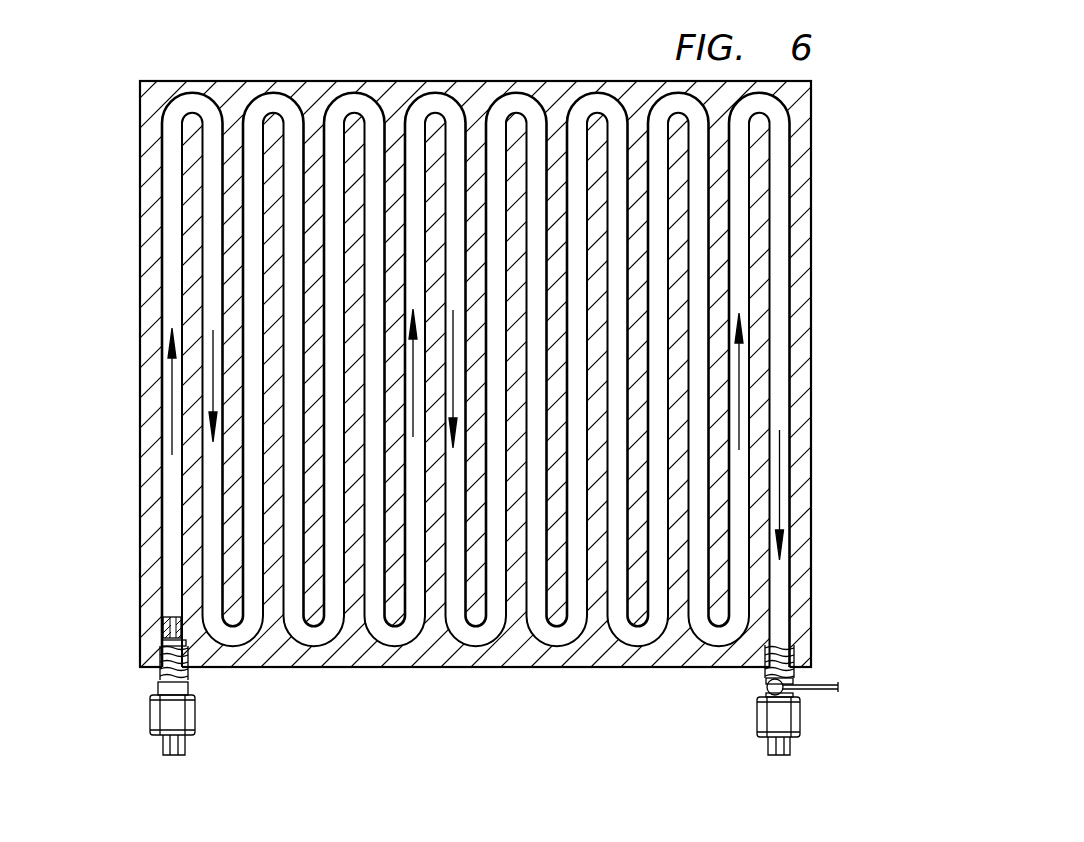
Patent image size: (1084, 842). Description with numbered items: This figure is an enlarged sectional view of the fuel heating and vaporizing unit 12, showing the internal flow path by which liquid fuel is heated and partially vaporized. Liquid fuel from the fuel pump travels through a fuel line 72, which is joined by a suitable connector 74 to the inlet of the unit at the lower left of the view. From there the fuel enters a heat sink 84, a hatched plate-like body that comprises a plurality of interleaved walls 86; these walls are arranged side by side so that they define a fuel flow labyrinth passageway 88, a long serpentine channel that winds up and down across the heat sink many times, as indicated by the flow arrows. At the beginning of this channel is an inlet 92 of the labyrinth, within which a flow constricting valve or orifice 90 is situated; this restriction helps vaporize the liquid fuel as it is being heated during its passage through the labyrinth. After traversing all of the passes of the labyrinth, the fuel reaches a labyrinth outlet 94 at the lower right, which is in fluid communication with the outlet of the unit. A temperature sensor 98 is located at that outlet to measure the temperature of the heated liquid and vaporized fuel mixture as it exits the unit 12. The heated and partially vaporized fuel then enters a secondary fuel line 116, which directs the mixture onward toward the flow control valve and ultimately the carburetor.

The fuel heating and vaporizing unit 12 is at (542, 393).
The fuel line 72 is at (190, 747).
The connector 74 is at (194, 713).
The heat sink 84 is at (138, 380).
The interleaved walls 86 is at (352, 137).
The fuel flow labyrinth passageway 88 is at (430, 105).
The flow constricting valve or orifice 90 is at (170, 618).
The inlet of the labyrinth 92 is at (163, 640).
The labyrinth outlet 94 is at (778, 622).
The temperature sensor 98 is at (768, 688).
The secondary fuel line 116 is at (793, 746).